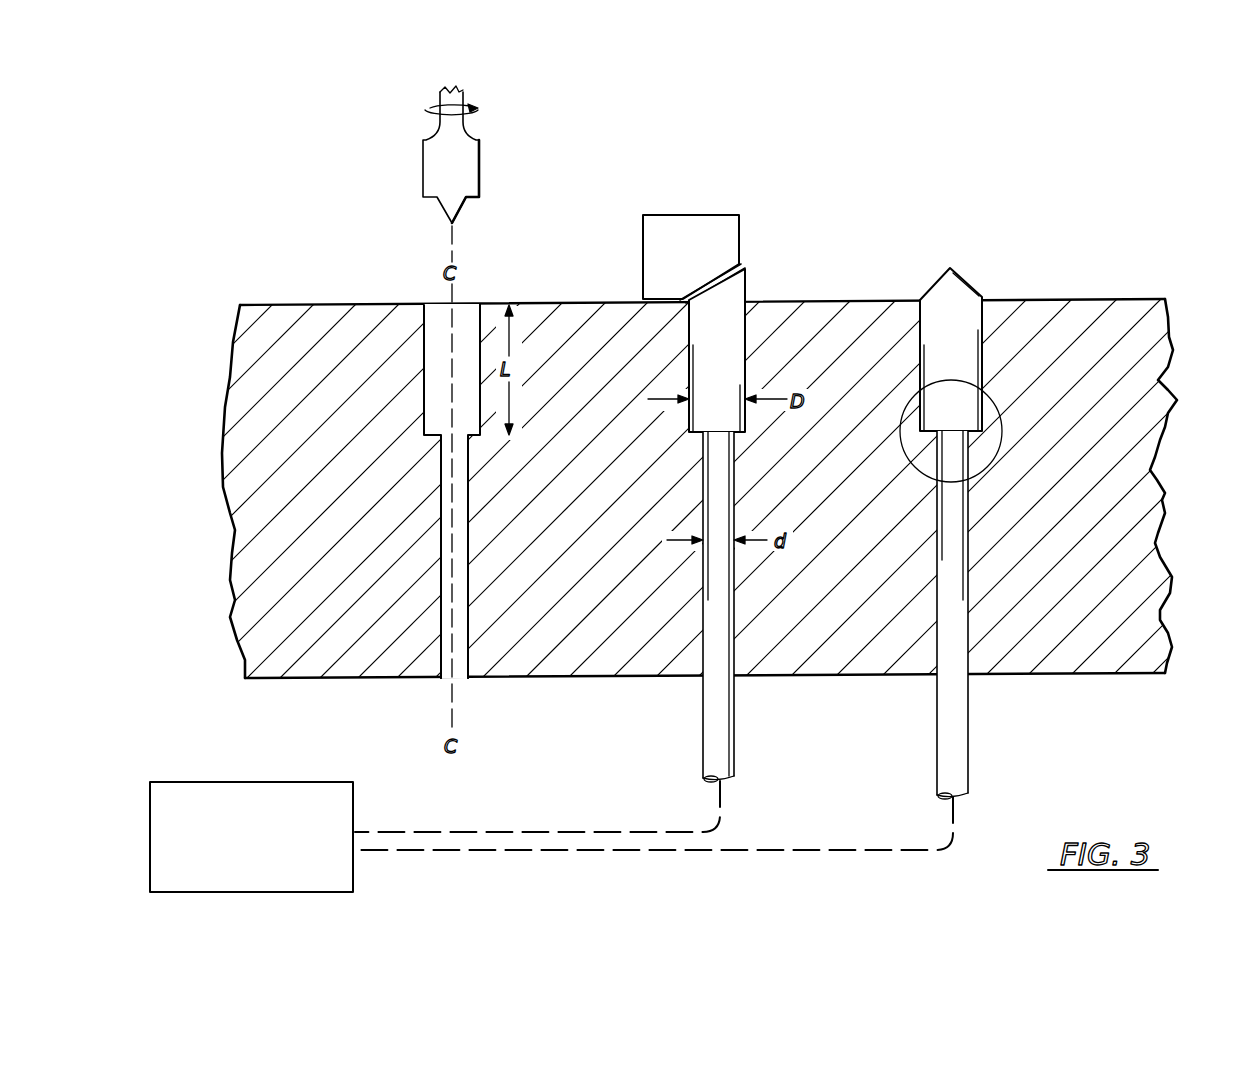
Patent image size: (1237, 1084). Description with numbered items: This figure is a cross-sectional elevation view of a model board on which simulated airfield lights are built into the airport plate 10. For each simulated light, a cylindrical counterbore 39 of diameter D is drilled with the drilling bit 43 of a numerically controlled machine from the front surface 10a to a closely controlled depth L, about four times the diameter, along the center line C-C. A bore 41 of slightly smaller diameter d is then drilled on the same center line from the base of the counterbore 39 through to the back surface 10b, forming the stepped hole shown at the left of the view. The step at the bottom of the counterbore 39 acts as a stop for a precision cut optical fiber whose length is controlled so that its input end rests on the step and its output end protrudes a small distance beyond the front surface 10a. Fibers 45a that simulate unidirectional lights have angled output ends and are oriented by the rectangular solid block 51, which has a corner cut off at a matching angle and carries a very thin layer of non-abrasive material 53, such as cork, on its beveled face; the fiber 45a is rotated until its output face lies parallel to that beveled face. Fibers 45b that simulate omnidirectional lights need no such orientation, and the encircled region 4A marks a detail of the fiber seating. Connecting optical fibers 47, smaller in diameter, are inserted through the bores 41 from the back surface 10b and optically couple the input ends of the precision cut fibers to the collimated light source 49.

The airport plate 10 is at (1098, 478).
The front surface 10a is at (1128, 298).
The back surface 10b is at (1093, 674).
The counterbore 39 is at (443, 316).
The bore 41 is at (461, 648).
The drilling bit 43 is at (468, 177).
The precision cut optical fiber simulating unidirectional light 45a is at (728, 330).
The precision cut optical fiber simulating omnidirectional light 45b is at (958, 310).
The connecting optical fiber 47 is at (724, 740).
The collimated light source 49 is at (178, 782).
The rectangular solid block 51 is at (700, 237).
The layer of non-abrasive material 53 is at (735, 268).
The detail circle 4A is at (1001, 430).